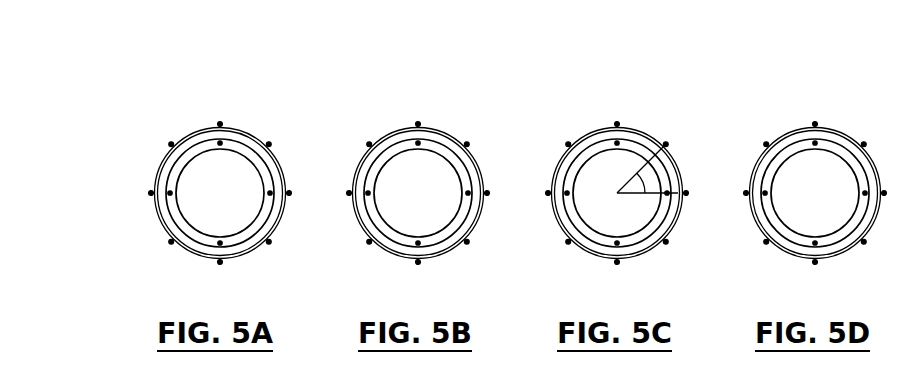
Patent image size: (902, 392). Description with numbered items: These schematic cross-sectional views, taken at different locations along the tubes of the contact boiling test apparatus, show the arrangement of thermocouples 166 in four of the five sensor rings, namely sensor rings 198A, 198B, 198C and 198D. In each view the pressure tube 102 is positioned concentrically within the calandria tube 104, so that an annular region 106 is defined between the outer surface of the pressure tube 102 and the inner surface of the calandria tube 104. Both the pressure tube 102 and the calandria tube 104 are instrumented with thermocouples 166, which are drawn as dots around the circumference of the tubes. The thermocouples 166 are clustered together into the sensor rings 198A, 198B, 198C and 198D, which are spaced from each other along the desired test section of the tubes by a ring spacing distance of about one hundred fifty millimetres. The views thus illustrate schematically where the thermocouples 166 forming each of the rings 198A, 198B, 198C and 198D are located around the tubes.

In FIG. 5A, the sensor ring 198A is at (163, 121).
In FIG. 5B, the sensor ring 198B is at (361, 121).
In FIG. 5C, the sensor ring 198C is at (571, 121).
In FIG. 5D, the sensor ring 198D is at (778, 121).
In FIG. 5A, the pressure tube 102 is at (264, 206).
In FIG. 5A, the calandria tube 104 is at (254, 210).
In FIG. 5A, the annular region 106 is at (220, 148).
In FIG. 5A, the thermocouples 166 is at (160, 193).
In FIG. 5B, the thermocouples 166 is at (442, 171).
In FIG. 5C, the thermocouples 166 is at (641, 171).
In FIG. 5D, the thermocouples 166 is at (816, 156).